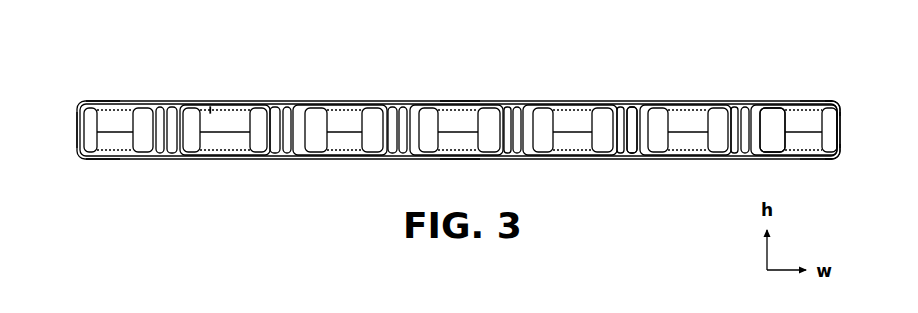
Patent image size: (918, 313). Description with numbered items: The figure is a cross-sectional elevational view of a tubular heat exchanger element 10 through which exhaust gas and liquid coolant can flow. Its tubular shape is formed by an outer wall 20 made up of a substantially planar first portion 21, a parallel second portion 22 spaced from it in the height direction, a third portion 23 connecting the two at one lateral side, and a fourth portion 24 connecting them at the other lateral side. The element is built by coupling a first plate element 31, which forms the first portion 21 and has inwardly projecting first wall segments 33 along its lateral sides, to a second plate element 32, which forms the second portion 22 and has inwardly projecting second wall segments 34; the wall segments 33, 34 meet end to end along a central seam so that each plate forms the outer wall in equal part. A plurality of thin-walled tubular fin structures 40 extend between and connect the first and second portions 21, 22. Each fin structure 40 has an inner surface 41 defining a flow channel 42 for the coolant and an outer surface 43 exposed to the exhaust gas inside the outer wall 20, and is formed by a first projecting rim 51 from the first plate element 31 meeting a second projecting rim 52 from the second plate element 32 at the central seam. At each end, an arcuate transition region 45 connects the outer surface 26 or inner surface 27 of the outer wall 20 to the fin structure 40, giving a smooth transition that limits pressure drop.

The heat exchanger element 10 is at (131, 49).
The outer wall 20 is at (101, 97).
The first portion 21 is at (462, 102).
The second portion 22 is at (460, 160).
The third portion 23 is at (78, 130).
The fourth portion 24 is at (841, 127).
The outer surface of the outer wall 26 is at (602, 101).
The inner surface of the outer wall 27 is at (200, 110).
The first plate element 31 is at (834, 103).
The second plate element 32 is at (834, 160).
The first wall segments 33 is at (78, 118).
The second wall segments 34 is at (78, 145).
The fin structures 40 is at (255, 139).
The inner surface 41 is at (632, 112).
The flow channel 42 is at (665, 90).
The outer surface 43 is at (266, 117).
The transition region 45 is at (207, 152).
The first projecting rim 51 is at (783, 122).
The second projecting rim 52 is at (783, 140).